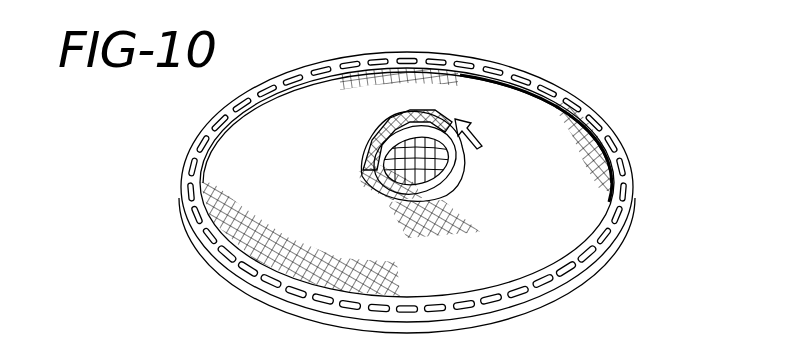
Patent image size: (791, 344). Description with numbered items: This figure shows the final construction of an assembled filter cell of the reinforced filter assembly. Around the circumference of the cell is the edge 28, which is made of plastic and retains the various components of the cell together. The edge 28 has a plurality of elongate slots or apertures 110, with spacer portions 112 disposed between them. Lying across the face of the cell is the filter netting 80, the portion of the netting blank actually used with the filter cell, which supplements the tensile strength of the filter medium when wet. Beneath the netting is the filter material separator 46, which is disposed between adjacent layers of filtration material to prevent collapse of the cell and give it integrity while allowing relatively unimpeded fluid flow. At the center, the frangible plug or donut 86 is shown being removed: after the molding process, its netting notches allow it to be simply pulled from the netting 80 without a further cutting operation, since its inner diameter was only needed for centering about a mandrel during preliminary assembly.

The edge 28 is at (612, 128).
The elongate slots 110 is at (563, 93).
The spacer portions 112 is at (600, 108).
The filter netting 80 is at (237, 208).
The filter material separator 46 is at (377, 150).
The plug or donut 86 is at (403, 112).